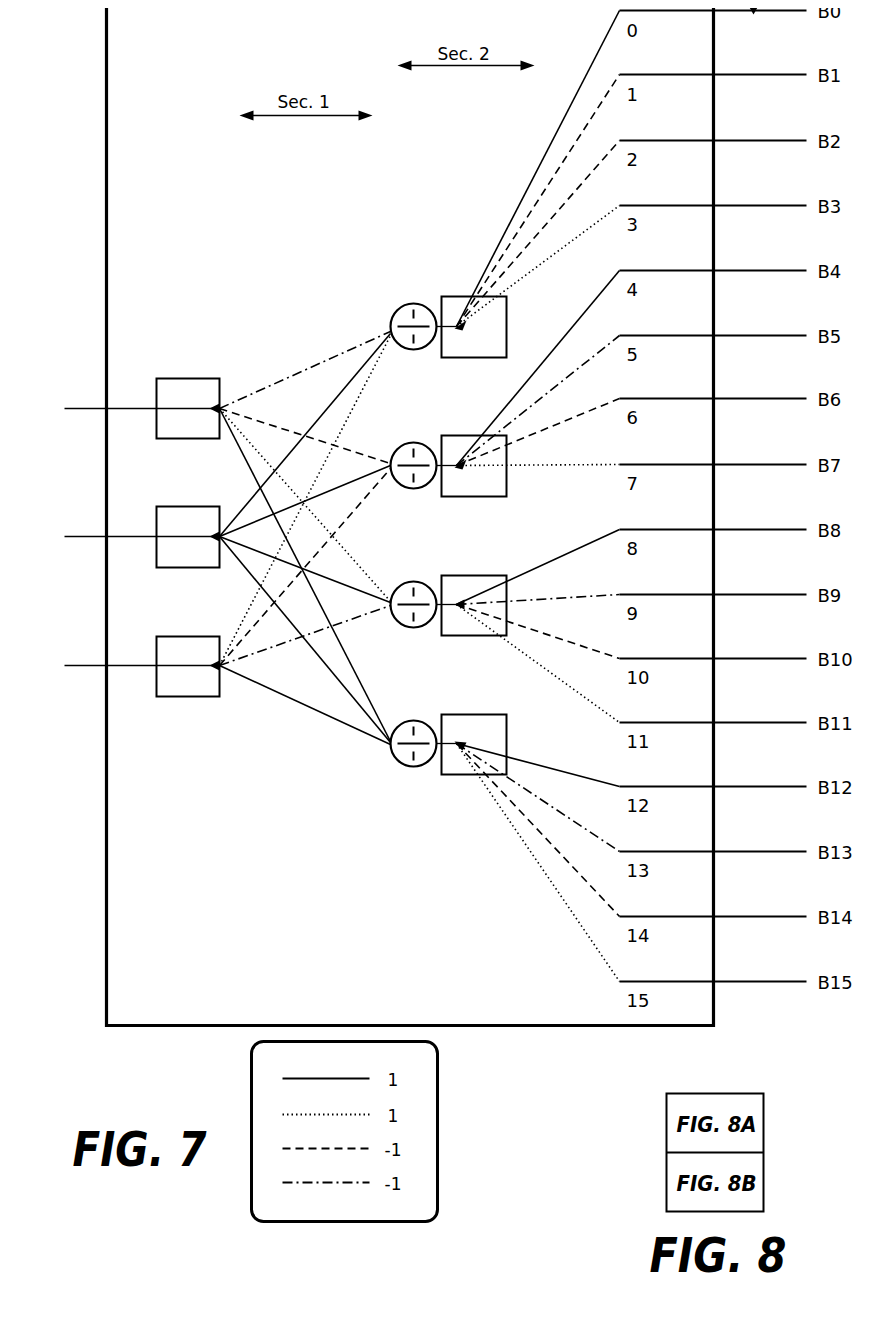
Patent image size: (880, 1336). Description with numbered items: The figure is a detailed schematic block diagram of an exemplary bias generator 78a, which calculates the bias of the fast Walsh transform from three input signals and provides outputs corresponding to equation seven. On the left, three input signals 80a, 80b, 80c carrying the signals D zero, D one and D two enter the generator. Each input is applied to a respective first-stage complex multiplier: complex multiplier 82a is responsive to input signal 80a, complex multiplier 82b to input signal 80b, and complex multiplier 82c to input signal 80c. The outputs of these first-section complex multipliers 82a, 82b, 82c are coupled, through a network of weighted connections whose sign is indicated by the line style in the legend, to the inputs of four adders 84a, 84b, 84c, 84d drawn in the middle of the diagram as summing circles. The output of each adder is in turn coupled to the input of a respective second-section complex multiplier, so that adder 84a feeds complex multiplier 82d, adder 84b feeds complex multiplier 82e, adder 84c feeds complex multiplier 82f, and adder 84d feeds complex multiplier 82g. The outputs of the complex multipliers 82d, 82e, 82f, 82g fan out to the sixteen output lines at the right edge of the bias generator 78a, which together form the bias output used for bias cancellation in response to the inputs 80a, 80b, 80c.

The bias generator 78a is at (107, 842).
The input signal 80a is at (88, 410).
The input signal 80b is at (88, 538).
The input signal 80c is at (88, 667).
The complex multiplier 82a is at (202, 380).
The complex multiplier 82b is at (202, 508).
The complex multiplier 82c is at (202, 638).
The complex multiplier 82d is at (490, 360).
The complex multiplier 82e is at (490, 499).
The complex multiplier 82f is at (488, 638).
The complex multiplier 82g is at (465, 777).
The adder 84a is at (413, 305).
The adder 84b is at (413, 444).
The adder 84c is at (413, 583).
The adder 84d is at (413, 722).